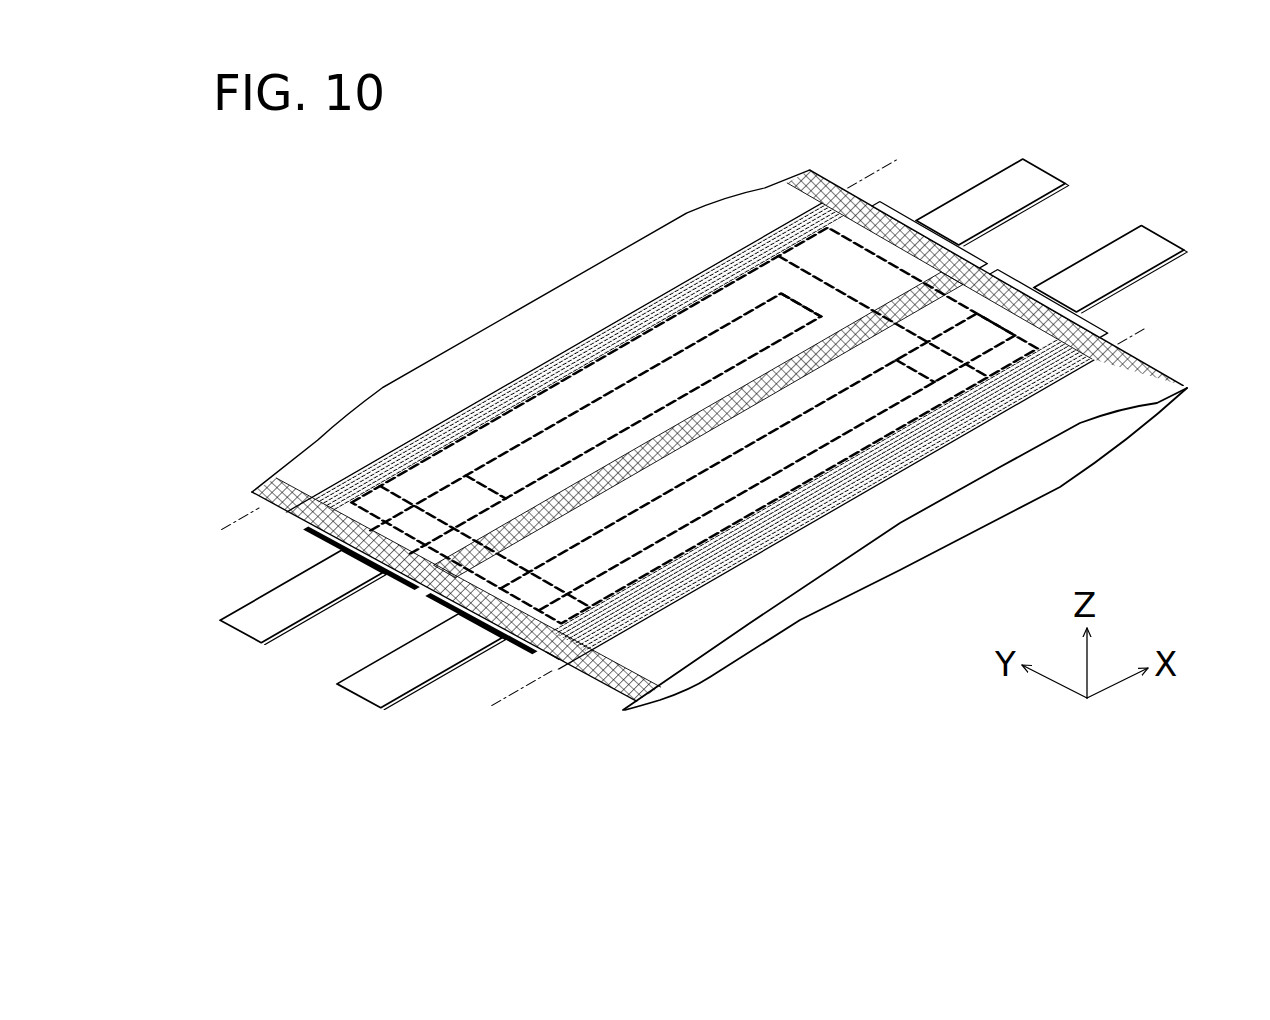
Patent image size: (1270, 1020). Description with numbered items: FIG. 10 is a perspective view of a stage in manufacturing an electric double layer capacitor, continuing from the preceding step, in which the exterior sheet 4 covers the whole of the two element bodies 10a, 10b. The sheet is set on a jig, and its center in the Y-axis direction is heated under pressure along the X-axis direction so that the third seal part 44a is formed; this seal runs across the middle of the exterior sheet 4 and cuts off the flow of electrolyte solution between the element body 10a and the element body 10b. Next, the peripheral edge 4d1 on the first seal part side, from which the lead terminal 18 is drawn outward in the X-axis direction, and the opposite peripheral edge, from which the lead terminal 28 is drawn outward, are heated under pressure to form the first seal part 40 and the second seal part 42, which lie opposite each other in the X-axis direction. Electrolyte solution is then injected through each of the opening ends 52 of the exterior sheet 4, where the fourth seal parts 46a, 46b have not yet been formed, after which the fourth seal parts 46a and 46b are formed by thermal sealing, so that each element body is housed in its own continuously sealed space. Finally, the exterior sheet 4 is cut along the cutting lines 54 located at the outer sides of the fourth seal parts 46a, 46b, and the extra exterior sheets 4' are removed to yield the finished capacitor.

The exterior sheet 4 is at (748, 439).
The extra exterior sheets 4' is at (457, 570).
The peripheral edge 4d1 is at (503, 647).
The element body 10a is at (785, 472).
The element body 10b is at (715, 335).
The lead terminal 18 is at (250, 625).
The lead terminal 28 is at (1010, 183).
The first seal part 40 is at (303, 540).
The second seal part 42 is at (897, 207).
The third seal part 44a is at (600, 480).
The fourth seal part 46a is at (717, 577).
The fourth seal part 46b is at (620, 330).
The opening ends 52 is at (380, 388).
The cutting lines 54 is at (247, 530).